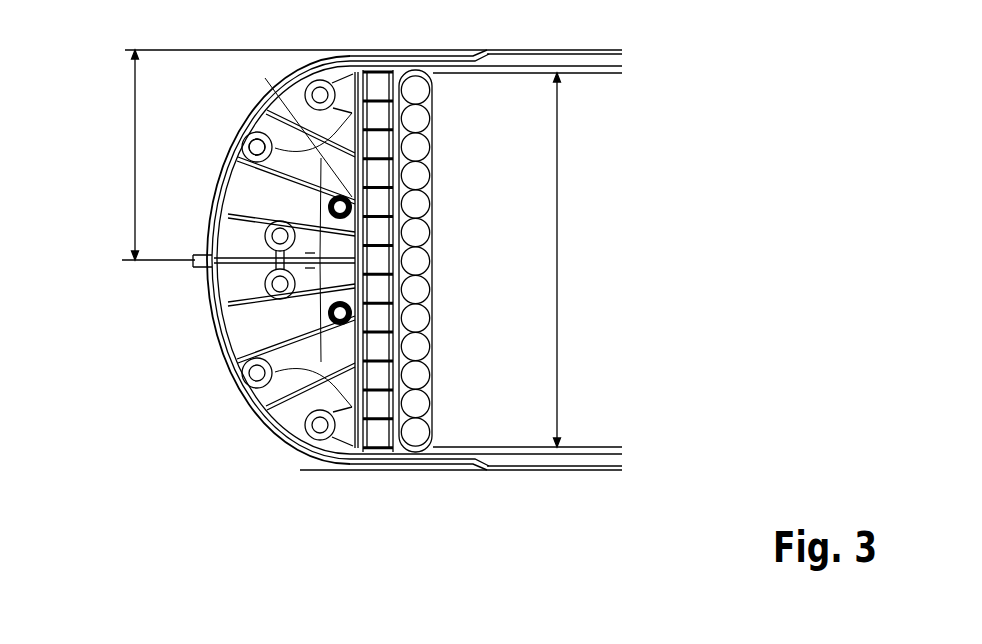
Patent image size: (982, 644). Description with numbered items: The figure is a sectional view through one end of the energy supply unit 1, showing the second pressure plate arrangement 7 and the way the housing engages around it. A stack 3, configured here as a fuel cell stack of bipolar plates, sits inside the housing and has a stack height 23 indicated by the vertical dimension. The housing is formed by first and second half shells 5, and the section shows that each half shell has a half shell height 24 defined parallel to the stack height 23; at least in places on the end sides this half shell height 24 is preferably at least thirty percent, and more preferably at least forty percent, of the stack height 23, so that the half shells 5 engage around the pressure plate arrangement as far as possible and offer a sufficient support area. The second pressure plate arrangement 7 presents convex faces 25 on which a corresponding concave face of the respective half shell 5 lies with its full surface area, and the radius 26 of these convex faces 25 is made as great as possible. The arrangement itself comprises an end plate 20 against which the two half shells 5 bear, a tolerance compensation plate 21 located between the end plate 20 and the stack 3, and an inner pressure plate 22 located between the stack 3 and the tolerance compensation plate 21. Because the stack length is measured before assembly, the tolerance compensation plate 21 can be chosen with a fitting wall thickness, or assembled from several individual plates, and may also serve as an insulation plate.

The energy supply unit 1 is at (700, 96).
The stack 3 is at (523, 182).
The half shells 5 is at (602, 52).
The second pressure plate arrangement 7 is at (463, 114).
The end plate 20 is at (323, 442).
The tolerance compensation plate 21 is at (382, 432).
The inner pressure plate 22 is at (422, 450).
The stack height 23 is at (560, 258).
The half shell height 24 is at (133, 150).
The convex faces 25 is at (268, 92).
The radius 26 is at (240, 142).